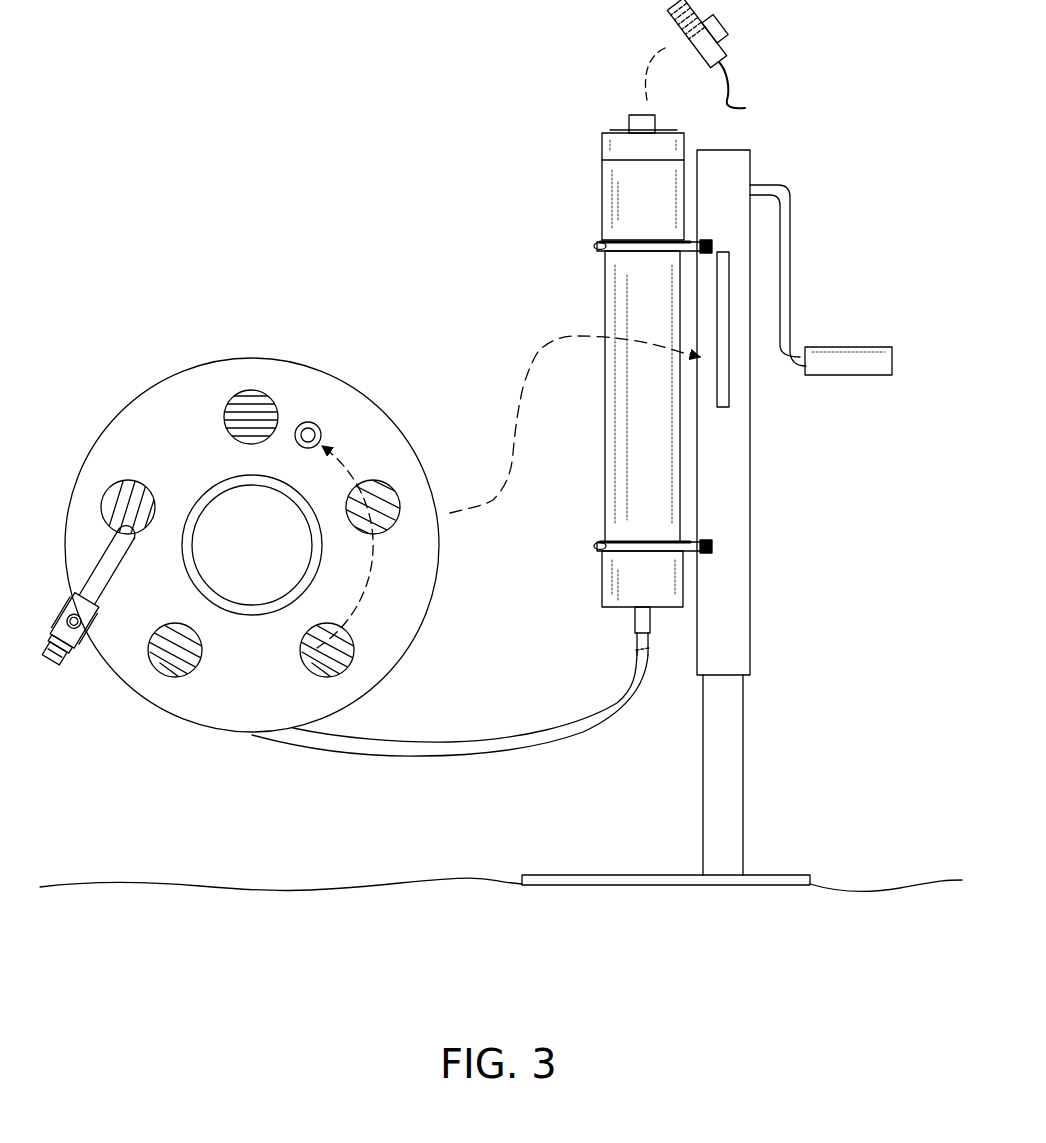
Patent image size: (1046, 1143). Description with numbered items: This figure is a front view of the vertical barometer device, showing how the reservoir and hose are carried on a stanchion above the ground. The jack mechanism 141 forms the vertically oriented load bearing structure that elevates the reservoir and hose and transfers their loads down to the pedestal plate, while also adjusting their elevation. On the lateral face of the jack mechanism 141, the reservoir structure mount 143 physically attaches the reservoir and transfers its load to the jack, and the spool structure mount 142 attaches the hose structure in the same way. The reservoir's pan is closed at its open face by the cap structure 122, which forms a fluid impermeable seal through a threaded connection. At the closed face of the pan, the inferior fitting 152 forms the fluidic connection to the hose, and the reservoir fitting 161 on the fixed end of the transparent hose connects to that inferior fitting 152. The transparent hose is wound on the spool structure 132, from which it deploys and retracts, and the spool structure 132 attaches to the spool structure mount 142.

The cap structure 122 is at (677, 133).
The spool structure 132 is at (215, 352).
The jack mechanism 141 is at (787, 306).
The spool structure mount 142 is at (723, 380).
The reservoir structure mount 143 is at (605, 543).
The inferior fitting 152 is at (633, 619).
The reservoir fitting 161 is at (645, 645).